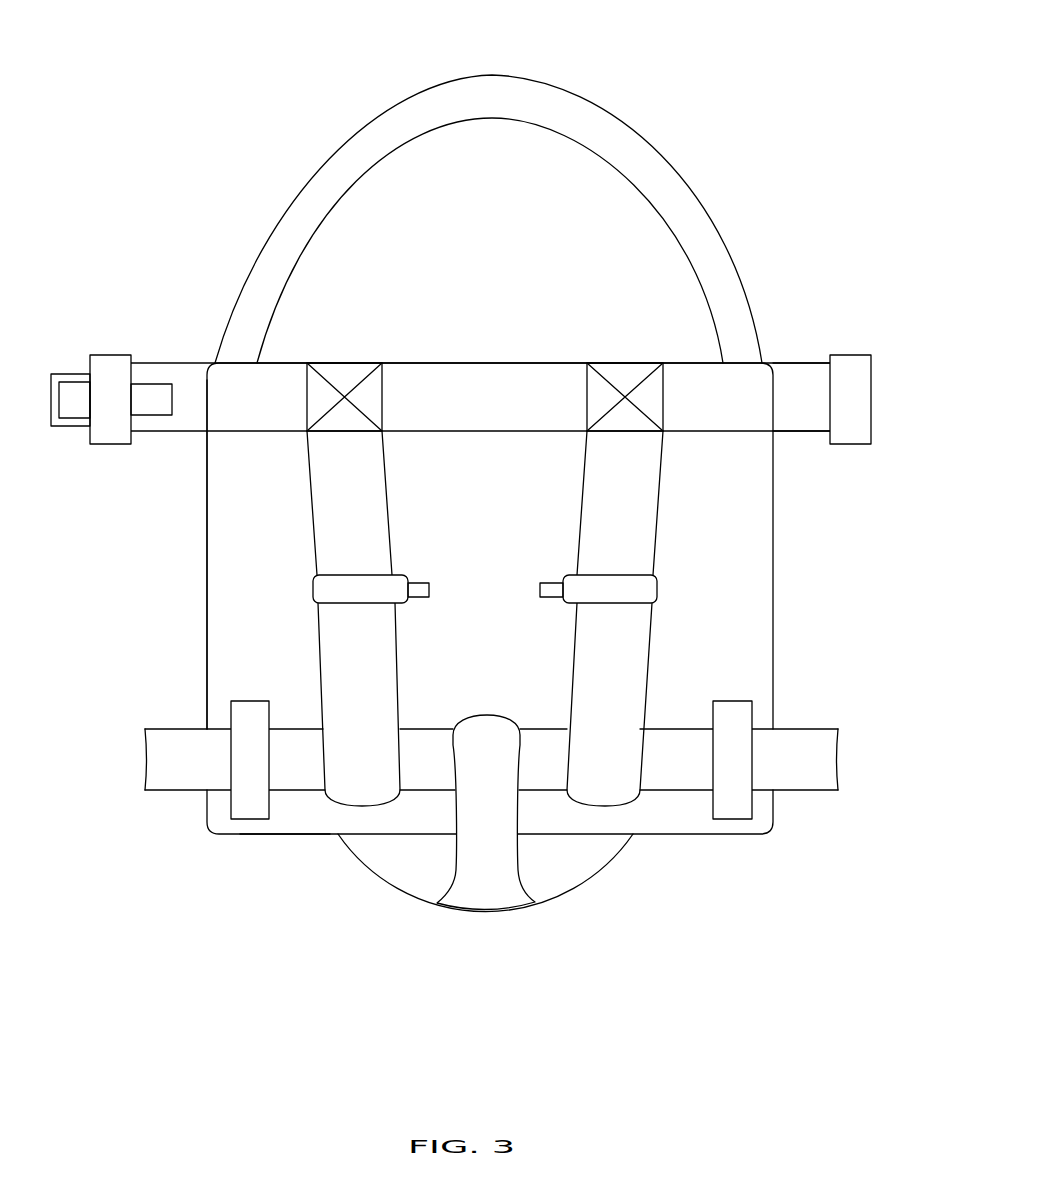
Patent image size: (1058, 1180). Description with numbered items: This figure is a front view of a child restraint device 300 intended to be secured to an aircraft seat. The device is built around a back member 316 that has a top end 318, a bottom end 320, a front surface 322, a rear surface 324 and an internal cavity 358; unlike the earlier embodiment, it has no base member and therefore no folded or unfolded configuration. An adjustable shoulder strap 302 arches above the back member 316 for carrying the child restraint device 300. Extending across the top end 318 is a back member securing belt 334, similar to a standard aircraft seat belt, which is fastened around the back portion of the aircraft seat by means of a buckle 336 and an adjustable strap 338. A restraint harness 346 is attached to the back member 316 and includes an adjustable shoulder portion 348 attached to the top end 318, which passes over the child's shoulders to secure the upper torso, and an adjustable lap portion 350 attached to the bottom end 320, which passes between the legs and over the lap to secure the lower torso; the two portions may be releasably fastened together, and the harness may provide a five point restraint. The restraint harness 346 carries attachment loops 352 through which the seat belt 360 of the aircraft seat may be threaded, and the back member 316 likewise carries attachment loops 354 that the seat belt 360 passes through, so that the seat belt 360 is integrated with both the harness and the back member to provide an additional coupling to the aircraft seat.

The child restraint device 300 is at (766, 46).
The adjustable shoulder strap 302 is at (693, 153).
The back member 316 is at (774, 566).
The top end 318 is at (468, 352).
The bottom end 320 is at (395, 902).
The front surface 322 is at (505, 548).
The rear surface 324 is at (206, 559).
The back member securing belt 334 is at (795, 362).
The buckle 336 is at (112, 354).
The adjustable strap 338 is at (140, 382).
The restraint harness 346 is at (303, 620).
The adjustable shoulder portion 348 is at (596, 500).
The adjustable lap portion 350 is at (493, 898).
The attachment loop 352 is at (372, 748).
The attachment loop 354 is at (250, 700).
The internal cavity 358 is at (263, 835).
The seat belt 360 is at (175, 782).